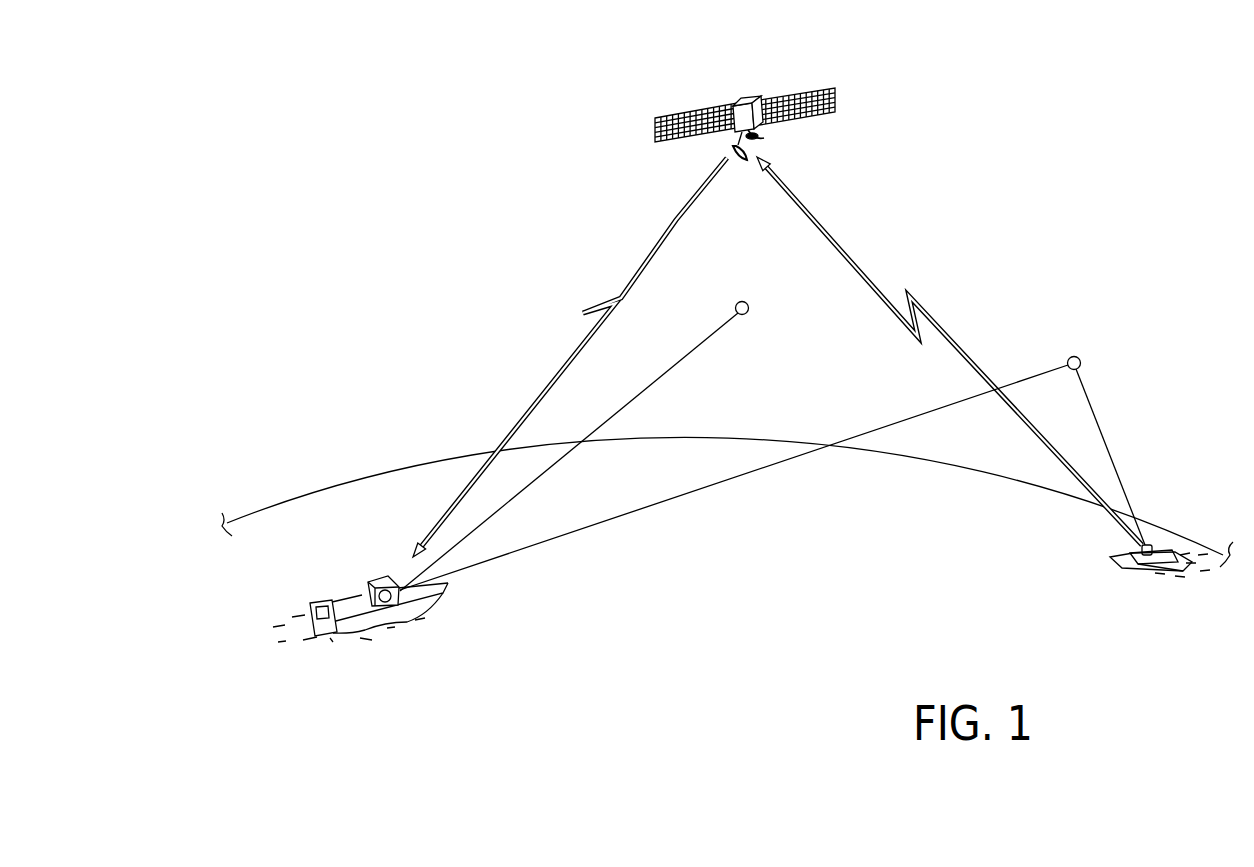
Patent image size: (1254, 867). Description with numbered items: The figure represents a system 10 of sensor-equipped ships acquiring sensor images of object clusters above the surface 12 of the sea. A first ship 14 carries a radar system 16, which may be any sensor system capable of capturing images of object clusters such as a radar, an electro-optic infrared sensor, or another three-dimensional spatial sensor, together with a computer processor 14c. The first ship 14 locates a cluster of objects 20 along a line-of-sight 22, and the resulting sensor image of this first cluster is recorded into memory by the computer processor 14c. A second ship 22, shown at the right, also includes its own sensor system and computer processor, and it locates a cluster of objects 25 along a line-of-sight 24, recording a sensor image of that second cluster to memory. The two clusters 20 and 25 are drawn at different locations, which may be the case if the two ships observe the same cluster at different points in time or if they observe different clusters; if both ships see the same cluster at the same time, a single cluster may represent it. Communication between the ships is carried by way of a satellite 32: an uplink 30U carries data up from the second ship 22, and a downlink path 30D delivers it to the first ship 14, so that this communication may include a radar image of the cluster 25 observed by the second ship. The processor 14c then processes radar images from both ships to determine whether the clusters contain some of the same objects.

The communication system 10 is at (834, 547).
The earth surface 12 is at (393, 470).
The first ship 14 is at (333, 608).
The computer processor 14c is at (330, 636).
The radar system 16 is at (378, 578).
The cluster of objects 20 is at (746, 301).
The line-of-sight 22 is at (690, 352).
The line-of-sight 24 is at (1111, 453).
The cluster of objects 25 is at (1078, 357).
The path 30D is at (660, 238).
The satellite uplink 30U is at (828, 228).
The satellite 32 is at (745, 97).